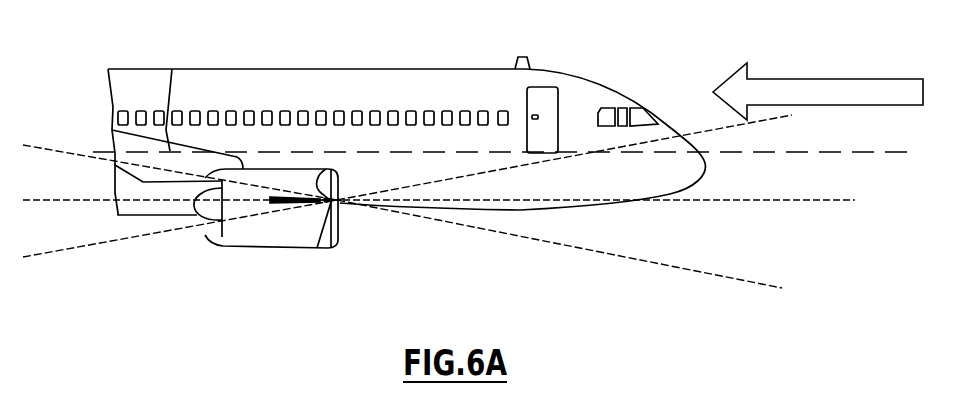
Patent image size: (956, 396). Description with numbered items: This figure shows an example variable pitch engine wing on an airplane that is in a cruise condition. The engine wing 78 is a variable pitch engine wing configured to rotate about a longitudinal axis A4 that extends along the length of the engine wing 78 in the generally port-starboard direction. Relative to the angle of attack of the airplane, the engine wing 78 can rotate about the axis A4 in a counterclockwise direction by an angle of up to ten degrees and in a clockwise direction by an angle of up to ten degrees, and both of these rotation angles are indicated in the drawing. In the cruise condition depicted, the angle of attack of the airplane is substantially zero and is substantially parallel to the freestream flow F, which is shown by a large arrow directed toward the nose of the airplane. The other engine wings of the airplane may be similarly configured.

The engine wing 78 is at (266, 238).
The longitudinal axis A4 is at (342, 166).
The freestream flow F is at (846, 92).